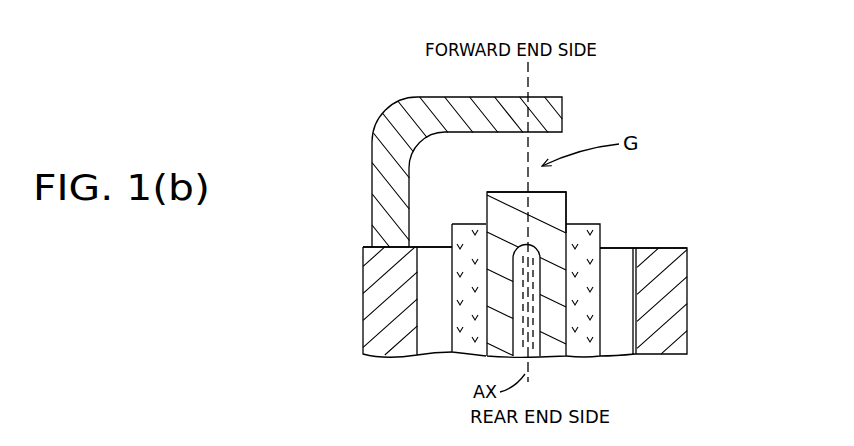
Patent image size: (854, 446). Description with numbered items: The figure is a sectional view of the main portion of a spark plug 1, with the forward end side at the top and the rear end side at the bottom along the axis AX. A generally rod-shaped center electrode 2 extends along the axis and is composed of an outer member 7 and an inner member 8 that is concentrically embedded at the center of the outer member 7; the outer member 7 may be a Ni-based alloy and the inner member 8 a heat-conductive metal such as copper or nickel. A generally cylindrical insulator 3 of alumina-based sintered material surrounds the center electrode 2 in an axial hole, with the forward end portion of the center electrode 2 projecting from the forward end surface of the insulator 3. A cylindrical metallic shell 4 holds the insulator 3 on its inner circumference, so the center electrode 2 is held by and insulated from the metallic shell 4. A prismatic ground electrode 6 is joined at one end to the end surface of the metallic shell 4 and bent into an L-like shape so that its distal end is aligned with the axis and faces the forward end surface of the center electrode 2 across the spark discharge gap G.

The spark plug 1 is at (606, 68).
The center electrode 2 is at (573, 190).
The insulator 3 is at (590, 228).
The metallic shell 4 is at (679, 270).
The ground electrode 6 is at (405, 118).
The outer member 7 is at (508, 218).
The inner member 8 is at (516, 290).